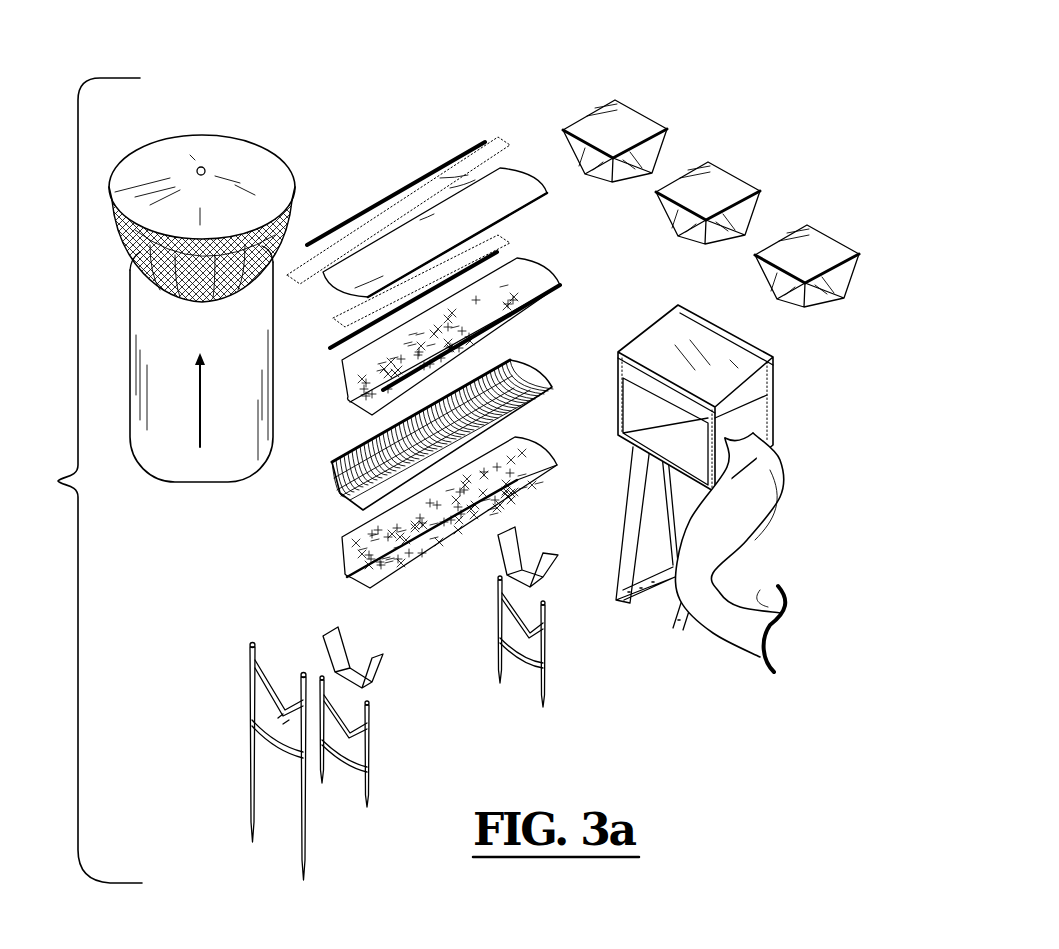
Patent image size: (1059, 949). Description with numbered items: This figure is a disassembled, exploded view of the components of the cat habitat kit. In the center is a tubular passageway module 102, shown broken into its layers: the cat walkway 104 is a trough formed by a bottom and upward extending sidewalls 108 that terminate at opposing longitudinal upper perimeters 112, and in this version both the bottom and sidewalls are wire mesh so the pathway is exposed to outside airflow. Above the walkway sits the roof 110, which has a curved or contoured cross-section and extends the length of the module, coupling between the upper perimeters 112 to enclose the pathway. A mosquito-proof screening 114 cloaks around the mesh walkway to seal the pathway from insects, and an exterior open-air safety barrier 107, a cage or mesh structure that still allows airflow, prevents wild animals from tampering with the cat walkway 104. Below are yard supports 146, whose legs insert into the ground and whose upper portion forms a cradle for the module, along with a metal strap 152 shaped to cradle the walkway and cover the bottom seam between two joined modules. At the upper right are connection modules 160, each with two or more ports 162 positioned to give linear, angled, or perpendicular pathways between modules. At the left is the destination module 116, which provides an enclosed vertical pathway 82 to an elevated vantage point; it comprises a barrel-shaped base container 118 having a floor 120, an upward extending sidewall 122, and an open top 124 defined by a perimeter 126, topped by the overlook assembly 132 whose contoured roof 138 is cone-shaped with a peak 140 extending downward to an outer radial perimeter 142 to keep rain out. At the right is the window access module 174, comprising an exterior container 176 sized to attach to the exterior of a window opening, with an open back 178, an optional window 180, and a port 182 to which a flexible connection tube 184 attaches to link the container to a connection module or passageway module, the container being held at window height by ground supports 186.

The vertical pathway 82 is at (197, 413).
The tubular passageway module 102 is at (369, 186).
The cat walkway 104 is at (436, 328).
The exterior open-air safety barrier 107 is at (352, 503).
The upward extending sidewalls 108 is at (502, 287).
The roof 110 is at (513, 170).
The longitudinal upper perimeters 112 is at (533, 307).
The mosquito-proof screening 114 is at (350, 563).
The destination module 116 is at (272, 102).
The base container 118 is at (118, 401).
The floor 120 is at (145, 463).
The upward extending sidewall 122 is at (133, 435).
The open top 124 is at (130, 312).
The perimeter 126 is at (143, 263).
The overlook assembly 132 is at (190, 108).
The contoured roof 138 is at (147, 163).
The peak 140 is at (201, 167).
The outer radial perimeter 142 is at (280, 160).
The yard supports 146 is at (220, 762).
The metal strap 152 is at (343, 645).
The connection modules 160 is at (742, 176).
The ports 162 is at (787, 312).
The window access module 174 is at (797, 452).
The exterior container 176 is at (705, 375).
The open back 178 is at (692, 313).
The window 180 is at (620, 423).
The port 182 is at (750, 432).
The flexible connection tube 184 is at (760, 528).
The ground supports 186 is at (628, 537).